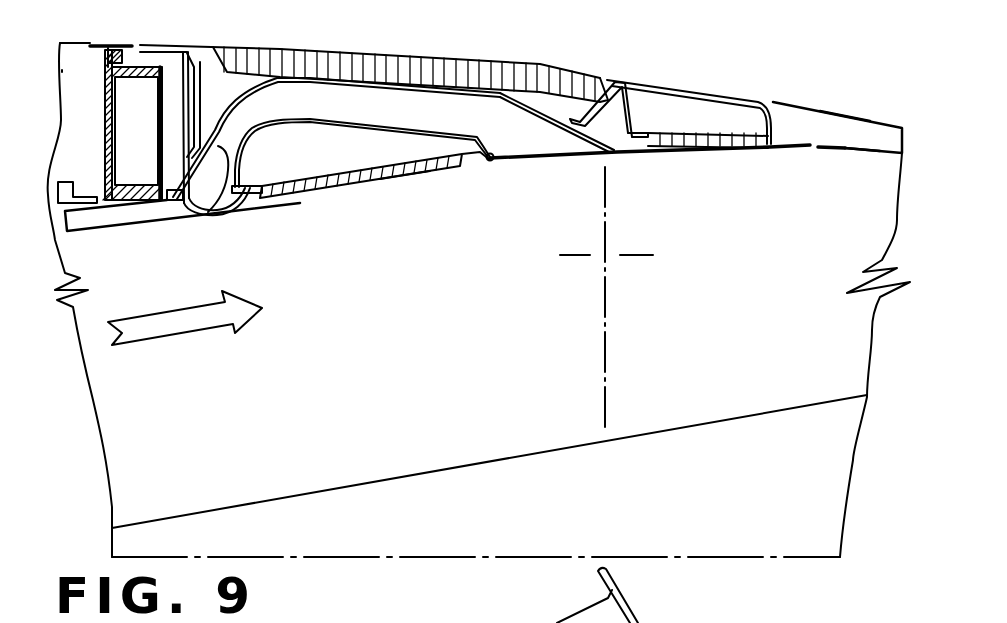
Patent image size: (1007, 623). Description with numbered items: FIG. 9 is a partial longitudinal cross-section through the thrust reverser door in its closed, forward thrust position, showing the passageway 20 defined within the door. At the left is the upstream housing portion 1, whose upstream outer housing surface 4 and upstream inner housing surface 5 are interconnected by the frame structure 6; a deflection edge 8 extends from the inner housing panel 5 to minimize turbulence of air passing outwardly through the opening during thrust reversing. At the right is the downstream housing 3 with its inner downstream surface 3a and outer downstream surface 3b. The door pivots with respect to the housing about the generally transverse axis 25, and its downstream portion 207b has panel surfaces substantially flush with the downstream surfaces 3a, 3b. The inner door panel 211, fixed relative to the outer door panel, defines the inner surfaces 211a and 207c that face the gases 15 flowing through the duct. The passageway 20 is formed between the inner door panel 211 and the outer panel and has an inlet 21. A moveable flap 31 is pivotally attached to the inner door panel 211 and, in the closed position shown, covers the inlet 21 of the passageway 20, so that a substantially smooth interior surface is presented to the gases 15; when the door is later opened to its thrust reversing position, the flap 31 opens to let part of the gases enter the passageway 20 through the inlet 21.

The upstream housing portion 1 is at (107, 36).
The downstream housing 3 is at (850, 128).
The inner downstream surface 3a is at (858, 150).
The outer downstream surface 3b is at (848, 113).
The upstream outer housing surface 4 is at (77, 53).
The upstream inner housing surface 5 is at (122, 215).
The frame structure 6 is at (107, 125).
The deflection edge 8 is at (212, 205).
The gases 15 is at (168, 322).
The passageway 20 is at (313, 105).
The inlet 21 is at (514, 135).
The transverse axis 25 is at (603, 257).
The flap 31 is at (557, 158).
The downstream portion of the door 207b is at (722, 117).
The inner surface 207c is at (682, 161).
The inner door panel 211 is at (350, 177).
The inner surface 211a is at (407, 190).